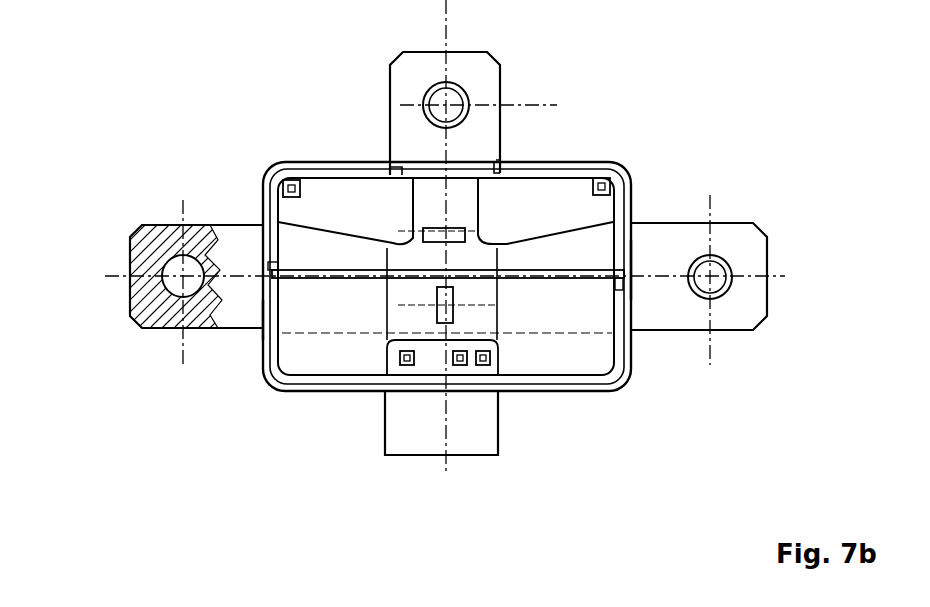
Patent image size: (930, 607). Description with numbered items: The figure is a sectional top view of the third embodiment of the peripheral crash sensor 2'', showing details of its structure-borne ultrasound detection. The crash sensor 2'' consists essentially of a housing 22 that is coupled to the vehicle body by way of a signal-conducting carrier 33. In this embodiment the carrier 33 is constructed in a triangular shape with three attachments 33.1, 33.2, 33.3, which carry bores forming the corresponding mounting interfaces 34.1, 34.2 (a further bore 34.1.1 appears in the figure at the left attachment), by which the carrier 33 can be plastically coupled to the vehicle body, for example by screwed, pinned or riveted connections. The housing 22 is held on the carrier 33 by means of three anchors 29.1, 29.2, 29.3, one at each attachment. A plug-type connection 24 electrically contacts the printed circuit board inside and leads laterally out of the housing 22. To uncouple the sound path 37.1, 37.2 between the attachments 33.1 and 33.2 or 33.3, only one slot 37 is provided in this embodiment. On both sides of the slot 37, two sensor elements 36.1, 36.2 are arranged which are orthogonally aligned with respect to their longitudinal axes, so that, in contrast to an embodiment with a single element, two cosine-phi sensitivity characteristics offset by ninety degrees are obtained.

The housing 22 is at (633, 195).
The plug-type connection 24 is at (407, 447).
The anchor 29.1 is at (265, 318).
The anchor 29.2 is at (633, 263).
The anchor 29.3 is at (506, 161).
The carrier 33 is at (235, 248).
The attachment 33.1 is at (228, 313).
The attachment 33.2 is at (653, 315).
The attachment 33.3 is at (482, 132).
The mounting interface 34.1 is at (450, 100).
The left fastening hole 34.1.1 is at (183, 290).
The mounting interface 34.2 is at (720, 290).
The sensor element 36.1 is at (440, 284).
The sensor element 36.2 is at (413, 233).
The slot 37 is at (370, 277).
The sound path 37.1 is at (540, 307).
The sound path 37.2 is at (342, 250).
The crash sensor 2'' is at (613, 450).